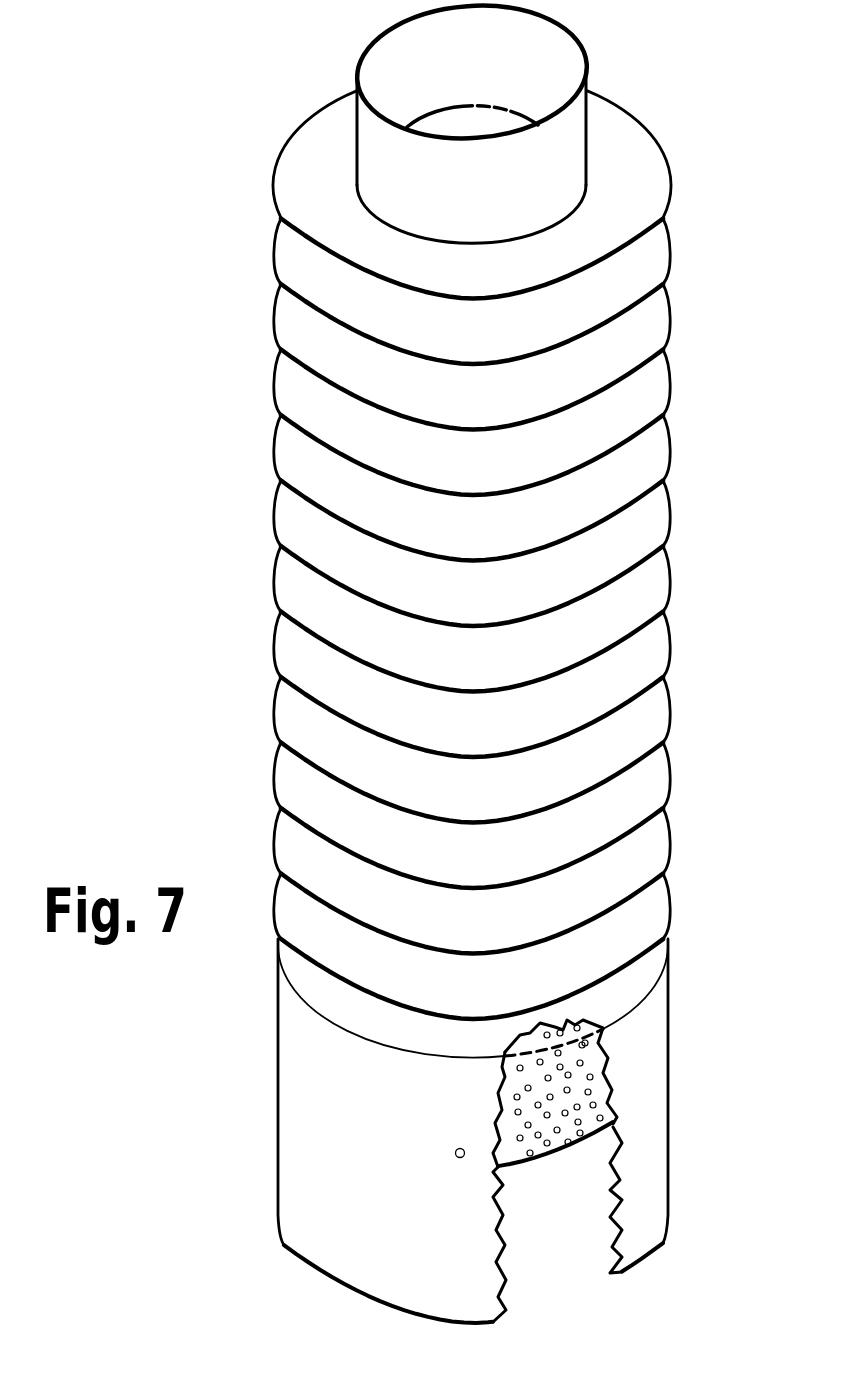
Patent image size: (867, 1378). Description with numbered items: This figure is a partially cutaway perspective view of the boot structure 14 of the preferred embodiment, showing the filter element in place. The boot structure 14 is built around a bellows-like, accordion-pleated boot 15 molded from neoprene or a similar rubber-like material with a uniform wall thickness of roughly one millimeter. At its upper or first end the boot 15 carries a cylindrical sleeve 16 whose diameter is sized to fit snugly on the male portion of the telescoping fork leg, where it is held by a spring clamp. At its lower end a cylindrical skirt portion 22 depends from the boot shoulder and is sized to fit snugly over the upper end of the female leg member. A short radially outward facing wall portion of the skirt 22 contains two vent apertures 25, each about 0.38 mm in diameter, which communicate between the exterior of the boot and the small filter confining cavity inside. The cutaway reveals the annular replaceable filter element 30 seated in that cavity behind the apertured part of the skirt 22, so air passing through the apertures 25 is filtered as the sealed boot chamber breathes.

The boot structure 14 is at (472, 661).
The boot 15 is at (295, 648).
The cylindrical sleeve 16 is at (560, 147).
The cylindrical skirt portion 22 is at (323, 1092).
The vent apertures 25 is at (455, 1152).
The replaceable filter element 30 is at (590, 1112).